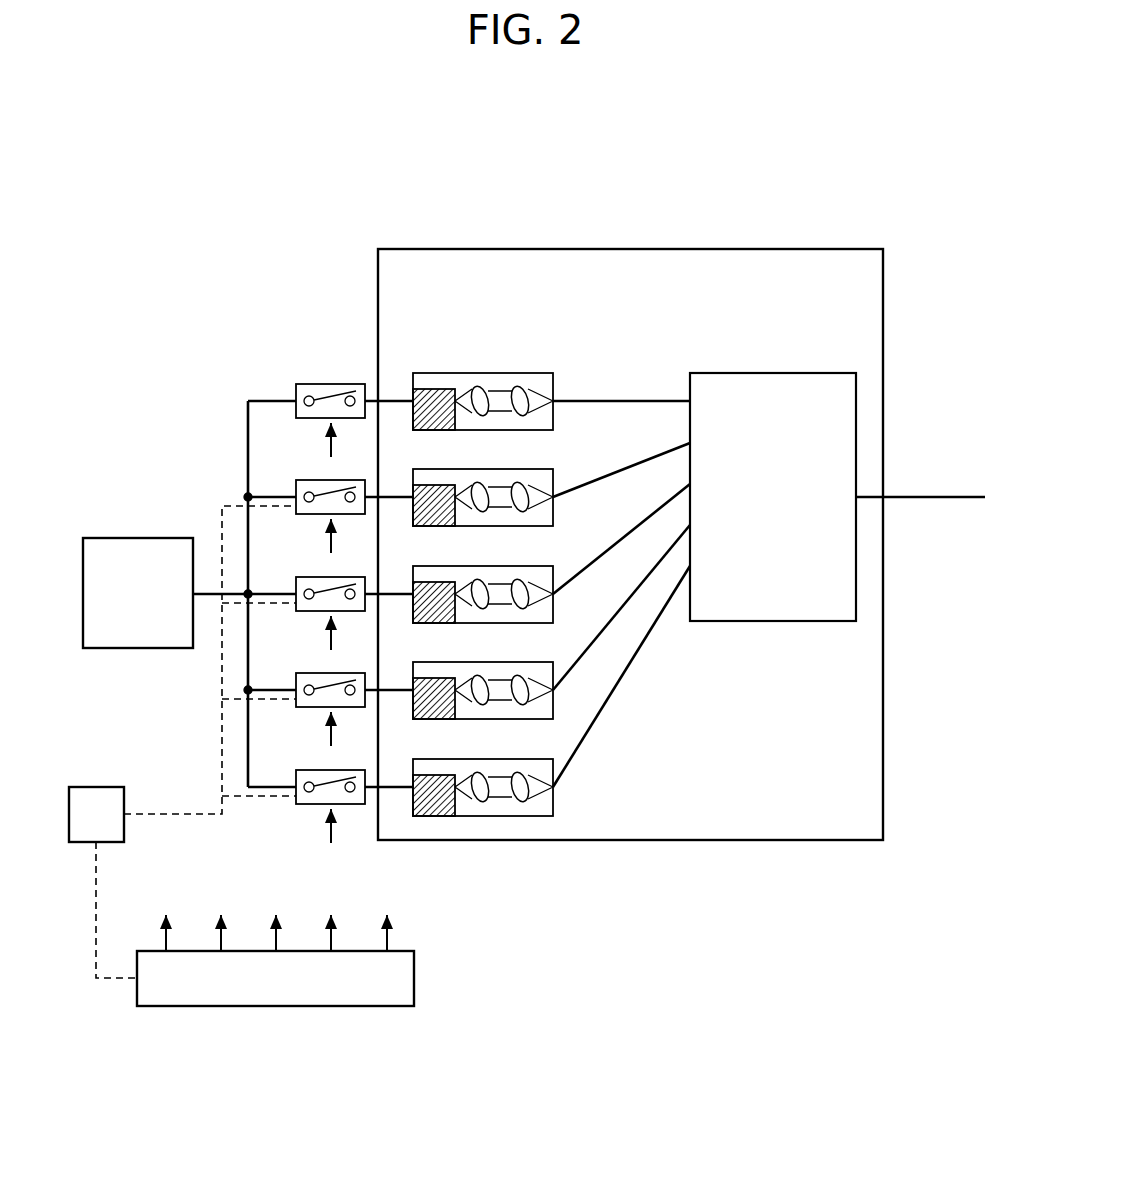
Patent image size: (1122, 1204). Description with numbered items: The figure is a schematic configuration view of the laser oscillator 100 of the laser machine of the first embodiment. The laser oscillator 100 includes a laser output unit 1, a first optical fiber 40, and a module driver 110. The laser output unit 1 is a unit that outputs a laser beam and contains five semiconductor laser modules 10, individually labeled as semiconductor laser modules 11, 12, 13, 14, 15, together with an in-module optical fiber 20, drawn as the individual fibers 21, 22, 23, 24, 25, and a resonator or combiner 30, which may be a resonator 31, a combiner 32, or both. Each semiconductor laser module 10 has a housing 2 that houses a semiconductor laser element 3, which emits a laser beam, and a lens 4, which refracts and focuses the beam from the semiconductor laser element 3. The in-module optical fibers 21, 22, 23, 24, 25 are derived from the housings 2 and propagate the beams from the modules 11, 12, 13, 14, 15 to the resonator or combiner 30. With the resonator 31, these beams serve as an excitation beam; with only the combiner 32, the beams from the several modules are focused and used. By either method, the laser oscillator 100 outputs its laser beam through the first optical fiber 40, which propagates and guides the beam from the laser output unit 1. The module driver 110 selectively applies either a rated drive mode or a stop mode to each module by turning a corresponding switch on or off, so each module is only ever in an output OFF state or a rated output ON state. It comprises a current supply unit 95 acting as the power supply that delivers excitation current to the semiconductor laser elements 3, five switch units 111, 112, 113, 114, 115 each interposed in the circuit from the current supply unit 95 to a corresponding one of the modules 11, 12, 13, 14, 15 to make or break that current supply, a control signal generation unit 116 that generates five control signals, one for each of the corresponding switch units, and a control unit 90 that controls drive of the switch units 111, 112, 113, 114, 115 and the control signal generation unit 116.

The laser output unit 1 is at (495, 232).
The housing 2 is at (411, 374).
The semiconductor laser element 3 is at (432, 393).
The lens 4 is at (526, 383).
The semiconductor laser module 10 is at (448, 315).
The semiconductor laser module 11 is at (510, 365).
The semiconductor laser module 12 is at (510, 461).
The semiconductor laser module 13 is at (510, 558).
The semiconductor laser module 14 is at (510, 654).
The semiconductor laser module 15 is at (510, 751).
The in-module optical fiber 20 is at (635, 343).
The in-module optical fiber 21 is at (630, 398).
The in-module optical fiber 22 is at (630, 465).
The in-module optical fiber 23 is at (630, 530).
The in-module optical fiber 24 is at (630, 606).
The in-module optical fiber 25 is at (630, 693).
The resonator or combiner 30 is at (814, 343).
The resonator 31 is at (773, 497).
The combiner 32 is at (773, 497).
The first optical fiber 40 is at (958, 492).
The control unit 90 is at (96, 787).
The current supply unit 95 is at (138, 538).
The laser oscillator 100 is at (733, 180).
The module driver 110 is at (236, 312).
The switch unit 111 is at (319, 385).
The switch unit 112 is at (319, 481).
The switch unit 113 is at (319, 578).
The switch unit 114 is at (319, 674).
The switch unit 115 is at (319, 771).
The control signal generation unit 116 is at (272, 1008).